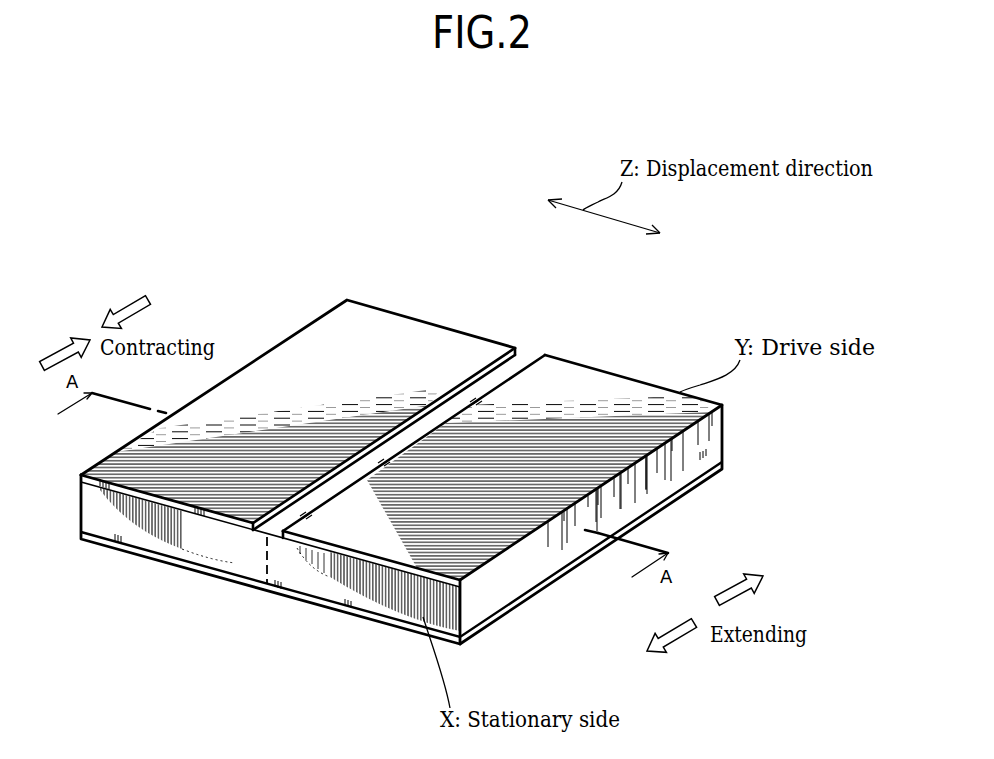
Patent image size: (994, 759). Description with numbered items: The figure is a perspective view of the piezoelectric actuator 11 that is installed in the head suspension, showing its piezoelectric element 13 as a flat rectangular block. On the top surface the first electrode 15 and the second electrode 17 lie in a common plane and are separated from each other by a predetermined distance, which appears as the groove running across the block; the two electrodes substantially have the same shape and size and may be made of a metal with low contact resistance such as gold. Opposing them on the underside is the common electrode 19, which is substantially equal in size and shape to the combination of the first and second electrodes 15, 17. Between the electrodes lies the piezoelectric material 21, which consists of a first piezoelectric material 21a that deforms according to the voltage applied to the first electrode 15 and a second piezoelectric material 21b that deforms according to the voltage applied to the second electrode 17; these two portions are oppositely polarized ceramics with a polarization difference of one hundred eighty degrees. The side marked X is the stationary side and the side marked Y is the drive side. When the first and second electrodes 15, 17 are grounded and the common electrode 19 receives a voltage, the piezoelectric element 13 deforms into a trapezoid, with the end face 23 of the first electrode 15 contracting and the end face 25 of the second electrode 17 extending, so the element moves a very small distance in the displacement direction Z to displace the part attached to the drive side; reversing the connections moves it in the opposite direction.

The piezoelectric actuator 11 is at (717, 283).
The piezoelectric element 13 is at (534, 340).
The first electrode 15 is at (418, 337).
The second electrode 17 is at (612, 393).
The common electrode 19 is at (679, 505).
The piezoelectric material 21 is at (363, 670).
The first piezoelectric material 21a is at (217, 553).
The second piezoelectric material 21b is at (350, 587).
The end face 23 is at (308, 322).
The end face 25 is at (620, 503).